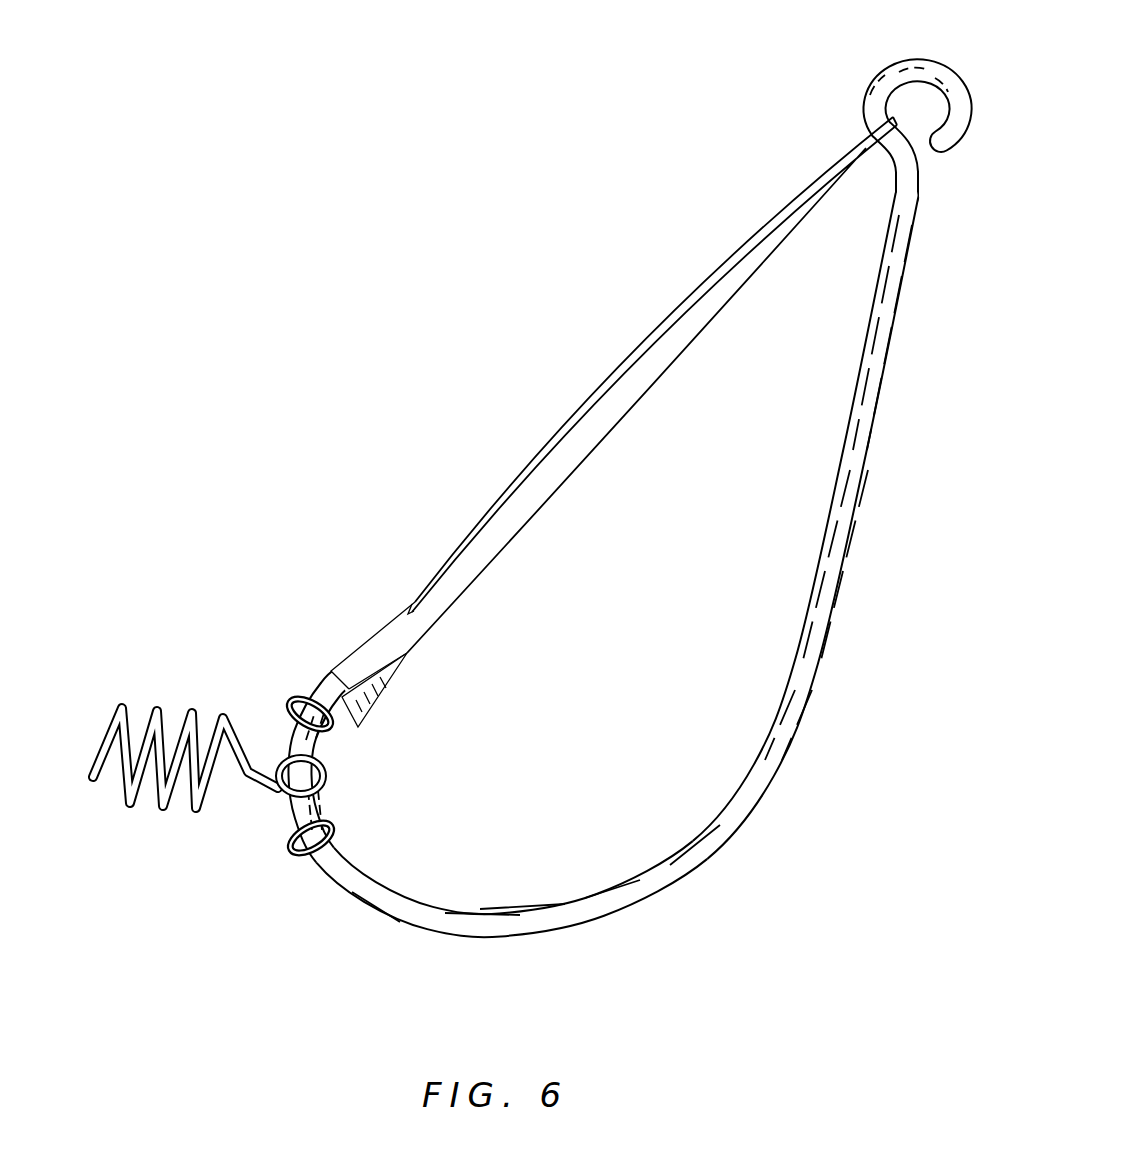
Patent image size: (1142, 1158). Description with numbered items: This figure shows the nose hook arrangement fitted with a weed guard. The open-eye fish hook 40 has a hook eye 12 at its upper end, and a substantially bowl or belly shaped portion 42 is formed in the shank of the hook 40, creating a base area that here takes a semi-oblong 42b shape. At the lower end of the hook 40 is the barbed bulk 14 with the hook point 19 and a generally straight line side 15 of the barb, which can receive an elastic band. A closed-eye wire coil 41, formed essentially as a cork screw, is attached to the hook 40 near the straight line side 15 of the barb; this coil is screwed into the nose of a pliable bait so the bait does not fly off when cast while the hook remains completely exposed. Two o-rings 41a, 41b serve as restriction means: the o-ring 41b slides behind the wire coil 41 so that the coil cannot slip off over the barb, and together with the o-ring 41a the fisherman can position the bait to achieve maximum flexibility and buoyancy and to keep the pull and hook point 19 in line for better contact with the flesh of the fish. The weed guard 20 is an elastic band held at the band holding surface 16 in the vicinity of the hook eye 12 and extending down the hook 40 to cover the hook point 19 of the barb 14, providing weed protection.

The hook eye 12 is at (888, 62).
The barbed bulk 14 is at (387, 685).
The straight line side 15 is at (342, 732).
The band holding surface 16 is at (910, 112).
The hook point 19 is at (415, 600).
The weed guard 20 is at (663, 383).
The hook 40 is at (827, 670).
The wire coil 41 is at (162, 810).
The o-ring 41a is at (293, 853).
The o-ring 41b is at (293, 702).
The belly shaped portion 42 is at (577, 932).
The semi-oblong shape 42b is at (517, 907).